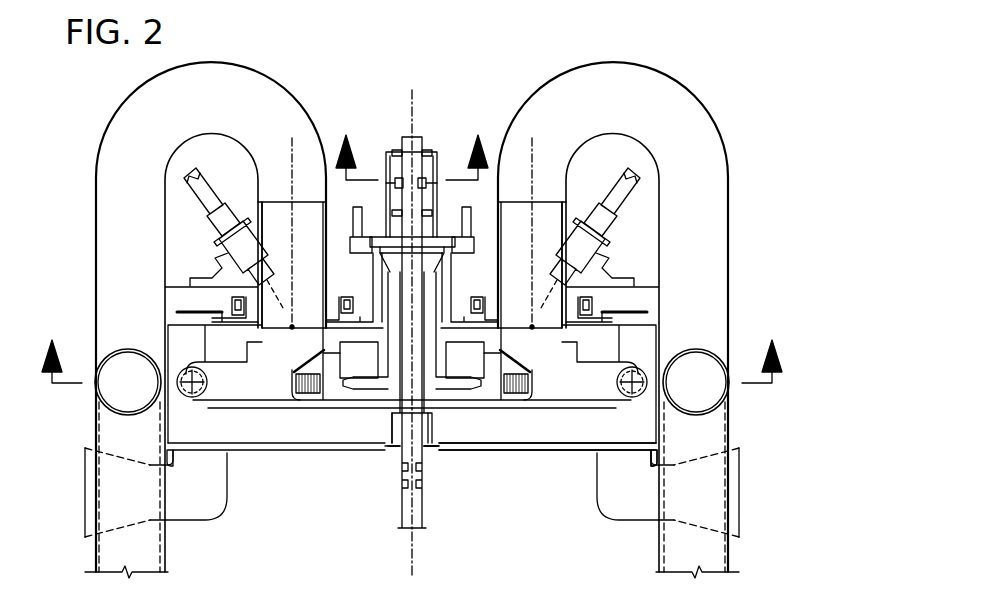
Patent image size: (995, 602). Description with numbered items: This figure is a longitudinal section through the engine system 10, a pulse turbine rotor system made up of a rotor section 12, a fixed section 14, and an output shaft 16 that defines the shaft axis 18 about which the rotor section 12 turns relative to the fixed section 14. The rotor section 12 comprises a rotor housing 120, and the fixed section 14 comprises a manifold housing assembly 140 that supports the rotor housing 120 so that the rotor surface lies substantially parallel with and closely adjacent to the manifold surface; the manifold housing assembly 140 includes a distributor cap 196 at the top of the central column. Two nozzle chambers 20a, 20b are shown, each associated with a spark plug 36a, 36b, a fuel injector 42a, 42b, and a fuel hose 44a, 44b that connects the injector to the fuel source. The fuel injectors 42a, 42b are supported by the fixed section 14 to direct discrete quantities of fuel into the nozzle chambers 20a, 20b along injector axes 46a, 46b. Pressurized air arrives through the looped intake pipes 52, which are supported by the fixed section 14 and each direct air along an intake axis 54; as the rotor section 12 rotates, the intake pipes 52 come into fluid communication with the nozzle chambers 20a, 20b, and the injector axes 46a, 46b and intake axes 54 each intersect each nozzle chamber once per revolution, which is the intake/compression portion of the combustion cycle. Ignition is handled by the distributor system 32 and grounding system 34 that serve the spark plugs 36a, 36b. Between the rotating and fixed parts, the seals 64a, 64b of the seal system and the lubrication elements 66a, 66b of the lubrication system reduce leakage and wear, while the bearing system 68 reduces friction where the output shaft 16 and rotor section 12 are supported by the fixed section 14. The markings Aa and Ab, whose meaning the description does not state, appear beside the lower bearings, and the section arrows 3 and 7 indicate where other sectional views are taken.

The engine system 10 is at (93, 106).
The rotor section 12 is at (506, 418).
The fixed section 14 is at (497, 458).
The output shaft 16 is at (402, 508).
The shaft axis 18 is at (412, 556).
The first nozzle chamber 20a is at (304, 362).
The second nozzle chamber 20b is at (551, 362).
The distributor system 32 is at (478, 236).
The grounding system 34 is at (383, 151).
The first spark plug 36a is at (305, 398).
The second spark plug 36b is at (513, 398).
The first fuel injector 42a is at (212, 232).
The second fuel injector 42b is at (605, 232).
The fuel hose 44a is at (205, 194).
The fuel hose 44b is at (627, 192).
The injector axis 46a is at (280, 298).
The injector axis 46b is at (541, 303).
The intake pipe 52 is at (103, 262).
The intake axis 54 is at (290, 153).
The seal system 64a is at (316, 301).
The seal system 64b is at (598, 304).
The lubrication system 66a is at (211, 307).
The lubrication system 66b is at (623, 321).
The bearing system 68 is at (390, 459).
The rotor housing 120 is at (490, 410).
The manifold housing assembly 140 is at (474, 456).
The distributor cap 196 is at (437, 162).
The first rotor axis Aa is at (185, 398).
The second rotor axis Ab is at (637, 398).
The section line 3 is at (412, 349).
The section line 7 is at (412, 146).